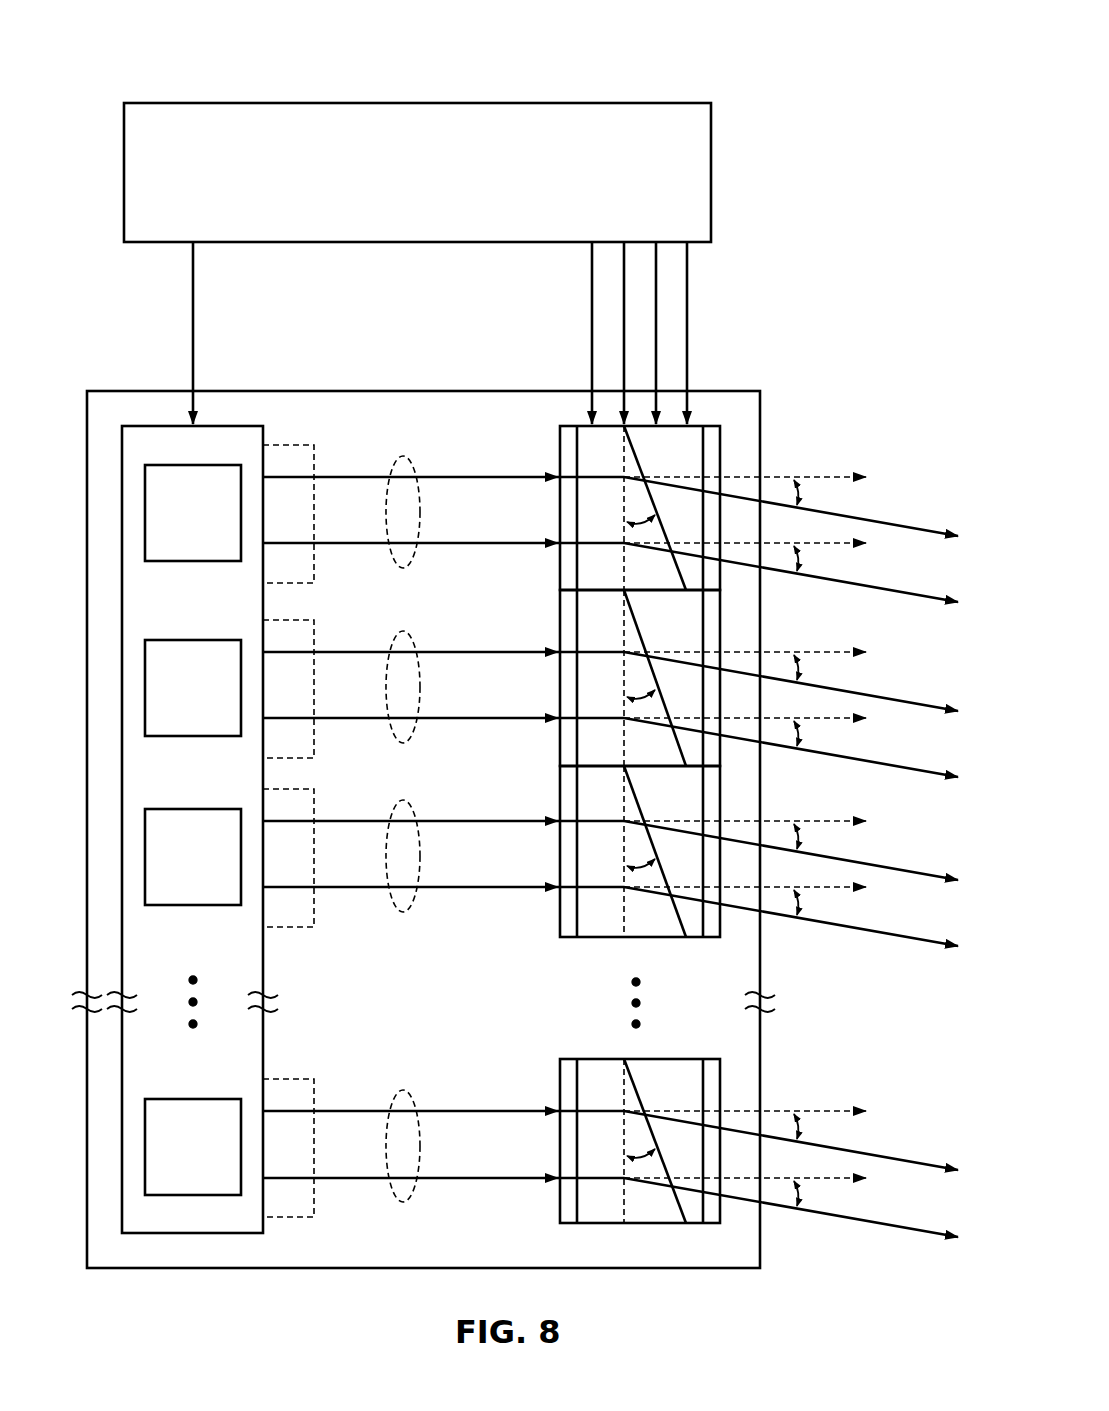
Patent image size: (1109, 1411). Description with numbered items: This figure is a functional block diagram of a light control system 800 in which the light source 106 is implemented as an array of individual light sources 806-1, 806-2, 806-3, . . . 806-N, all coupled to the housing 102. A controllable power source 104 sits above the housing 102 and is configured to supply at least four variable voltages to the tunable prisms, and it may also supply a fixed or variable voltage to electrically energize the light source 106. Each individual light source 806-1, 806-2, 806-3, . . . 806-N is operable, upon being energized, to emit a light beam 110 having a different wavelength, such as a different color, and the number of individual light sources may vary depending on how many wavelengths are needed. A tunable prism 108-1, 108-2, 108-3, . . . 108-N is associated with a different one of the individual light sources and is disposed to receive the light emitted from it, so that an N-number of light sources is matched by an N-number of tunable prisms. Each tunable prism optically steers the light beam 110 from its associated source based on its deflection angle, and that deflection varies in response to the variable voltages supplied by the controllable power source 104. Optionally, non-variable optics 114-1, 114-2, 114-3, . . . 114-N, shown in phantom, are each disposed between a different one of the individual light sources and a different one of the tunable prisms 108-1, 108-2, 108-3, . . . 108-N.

The light control system 800 is at (138, 46).
The controllable power source 104 is at (197, 103).
The housing 102 is at (162, 391).
The light source 106 is at (214, 426).
The individual light source 806-1 is at (156, 525).
The individual light source 806-2 is at (156, 700).
The individual light source 806-3 is at (156, 869).
The individual light source 806-N is at (154, 1159).
The non-variable optic 114-1 is at (290, 445).
The non-variable optic 114-2 is at (290, 620).
The non-variable optic 114-3 is at (290, 789).
The non-variable optic 114-N is at (290, 1079).
The light beam 110 is at (403, 456).
The tunable prism 108-1 is at (720, 458).
The tunable prism 108-2 is at (720, 633).
The tunable prism 108-3 is at (720, 802).
The tunable prism 108-N is at (720, 1092).